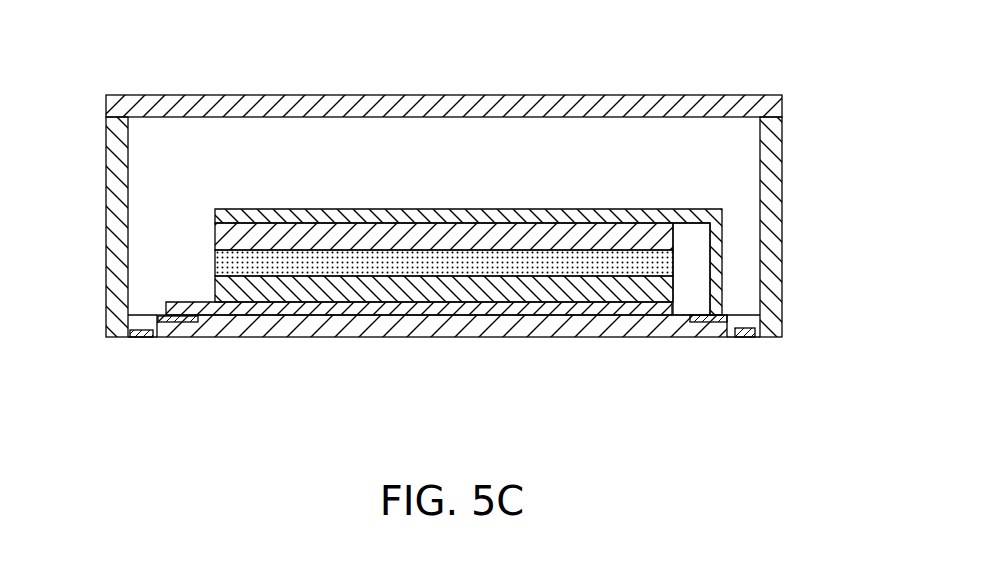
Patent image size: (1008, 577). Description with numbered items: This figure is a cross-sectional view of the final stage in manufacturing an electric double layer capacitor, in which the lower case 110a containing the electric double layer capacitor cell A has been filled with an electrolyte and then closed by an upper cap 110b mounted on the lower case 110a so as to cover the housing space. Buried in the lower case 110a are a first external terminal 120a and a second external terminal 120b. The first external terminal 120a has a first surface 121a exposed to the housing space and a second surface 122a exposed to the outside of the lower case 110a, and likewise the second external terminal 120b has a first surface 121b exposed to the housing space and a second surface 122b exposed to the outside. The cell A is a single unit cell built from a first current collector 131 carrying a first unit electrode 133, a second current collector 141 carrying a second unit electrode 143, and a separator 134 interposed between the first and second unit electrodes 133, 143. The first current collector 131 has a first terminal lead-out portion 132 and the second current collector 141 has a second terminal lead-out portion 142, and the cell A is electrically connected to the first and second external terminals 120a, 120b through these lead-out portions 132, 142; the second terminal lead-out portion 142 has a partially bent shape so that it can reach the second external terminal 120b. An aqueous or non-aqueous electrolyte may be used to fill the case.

The lower case 110a is at (767, 217).
The upper cap 110b is at (770, 100).
The first external terminal 120a is at (120, 368).
The second external terminal 120b is at (713, 378).
The first surface of the first external terminal 121a is at (163, 317).
The first surface of the second external terminal 121b is at (697, 315).
The second surface of the first external terminal 122a is at (137, 367).
The second surface of the second external terminal 122b is at (748, 365).
The first current collector 131 is at (330, 307).
The first terminal lead-out portion 132 is at (187, 310).
The first unit electrode 133 is at (438, 293).
The separator 134 is at (265, 263).
The second current collector 141 is at (468, 215).
The second terminal lead-out portion 142 is at (715, 262).
The second unit electrode 143 is at (372, 237).
The electric double layer capacitor cell A is at (518, 198).